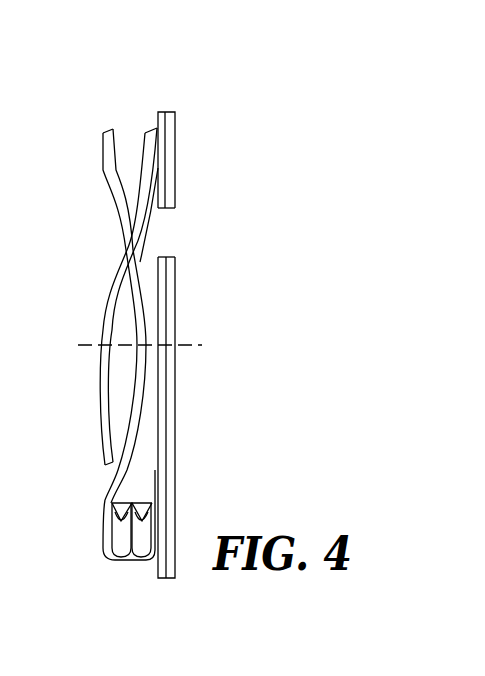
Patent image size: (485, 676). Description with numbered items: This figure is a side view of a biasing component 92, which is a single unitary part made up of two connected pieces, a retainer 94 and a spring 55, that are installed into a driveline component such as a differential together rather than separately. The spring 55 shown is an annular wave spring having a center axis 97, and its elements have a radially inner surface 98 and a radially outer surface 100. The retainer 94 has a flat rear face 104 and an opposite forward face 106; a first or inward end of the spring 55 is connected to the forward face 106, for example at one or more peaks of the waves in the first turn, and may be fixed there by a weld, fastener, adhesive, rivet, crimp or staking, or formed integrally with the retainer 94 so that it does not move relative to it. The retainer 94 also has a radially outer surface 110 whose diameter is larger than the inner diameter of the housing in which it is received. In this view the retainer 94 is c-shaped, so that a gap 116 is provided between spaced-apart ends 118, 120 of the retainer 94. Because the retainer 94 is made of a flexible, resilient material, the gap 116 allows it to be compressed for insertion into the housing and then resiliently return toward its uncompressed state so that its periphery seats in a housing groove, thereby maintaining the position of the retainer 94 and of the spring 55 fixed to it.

The biasing component 92 is at (203, 143).
The retainer 94 is at (167, 300).
The center axis 97 is at (188, 347).
The radially inner surface 98 is at (133, 500).
The radially outer surface 100 is at (117, 561).
The flat rear face 104 is at (177, 128).
The forward face 106 is at (158, 121).
The radially outer surface 110 is at (159, 111).
The gap 116 is at (160, 233).
The end 118 is at (160, 210).
The end 120 is at (163, 257).
The spring 55 is at (113, 490).